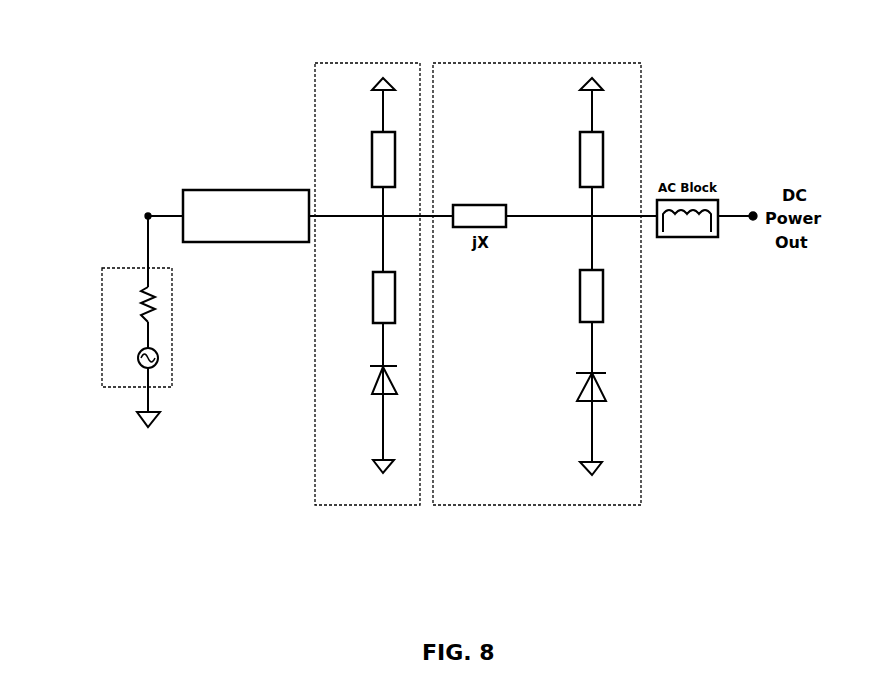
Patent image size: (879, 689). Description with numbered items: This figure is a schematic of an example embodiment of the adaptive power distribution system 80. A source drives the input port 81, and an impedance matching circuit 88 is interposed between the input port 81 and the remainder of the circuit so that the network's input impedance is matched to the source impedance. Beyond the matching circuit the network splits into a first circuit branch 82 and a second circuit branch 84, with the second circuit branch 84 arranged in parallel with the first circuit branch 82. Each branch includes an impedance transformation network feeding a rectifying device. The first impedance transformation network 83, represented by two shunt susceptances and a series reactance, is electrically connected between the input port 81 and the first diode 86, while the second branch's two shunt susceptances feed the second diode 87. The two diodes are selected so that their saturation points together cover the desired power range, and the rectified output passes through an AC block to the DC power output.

The adaptive power distribution system 80 is at (221, 131).
The input port 81 is at (146, 213).
The first circuit branch 82 is at (674, 327).
The first impedance transformation network 83 is at (587, 300).
The second circuit branch 84 is at (340, 300).
The first diode 86 is at (575, 403).
The second diode 87 is at (372, 398).
The impedance matching circuit 88 is at (269, 245).